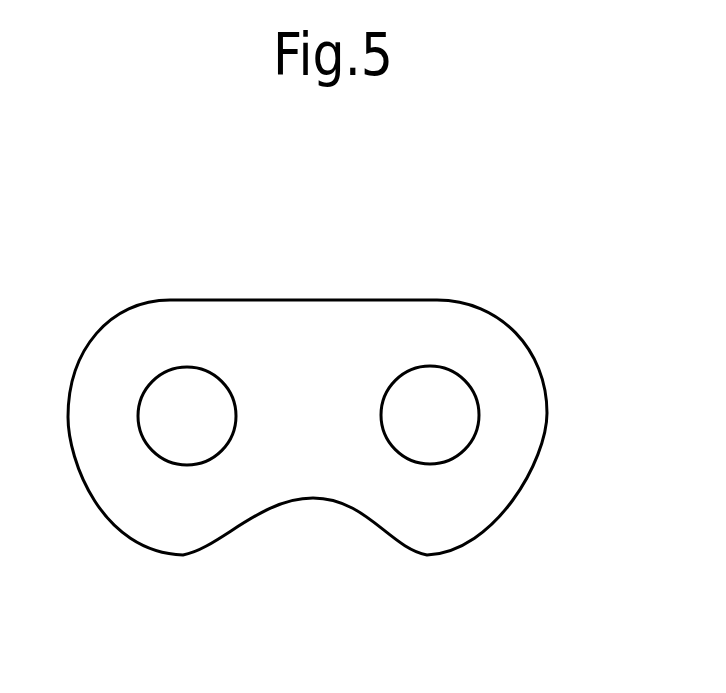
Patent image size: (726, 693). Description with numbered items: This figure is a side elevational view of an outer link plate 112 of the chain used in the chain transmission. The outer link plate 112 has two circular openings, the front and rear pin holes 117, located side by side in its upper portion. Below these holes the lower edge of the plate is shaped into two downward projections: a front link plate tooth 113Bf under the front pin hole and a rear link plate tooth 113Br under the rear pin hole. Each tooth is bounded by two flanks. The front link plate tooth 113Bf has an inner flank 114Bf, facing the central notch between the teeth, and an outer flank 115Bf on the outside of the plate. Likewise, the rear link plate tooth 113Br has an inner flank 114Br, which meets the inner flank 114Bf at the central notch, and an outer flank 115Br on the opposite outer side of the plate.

The outer link plate 112 is at (322, 327).
The pin holes 117 is at (153, 378).
The outer flank 115Bf is at (120, 518).
The front link plate tooth 113Bf is at (187, 543).
The inner flank 114Bf is at (225, 537).
The inner flank 114Br is at (380, 532).
The rear link plate tooth 113Br is at (430, 547).
The outer flank 115Br is at (492, 522).